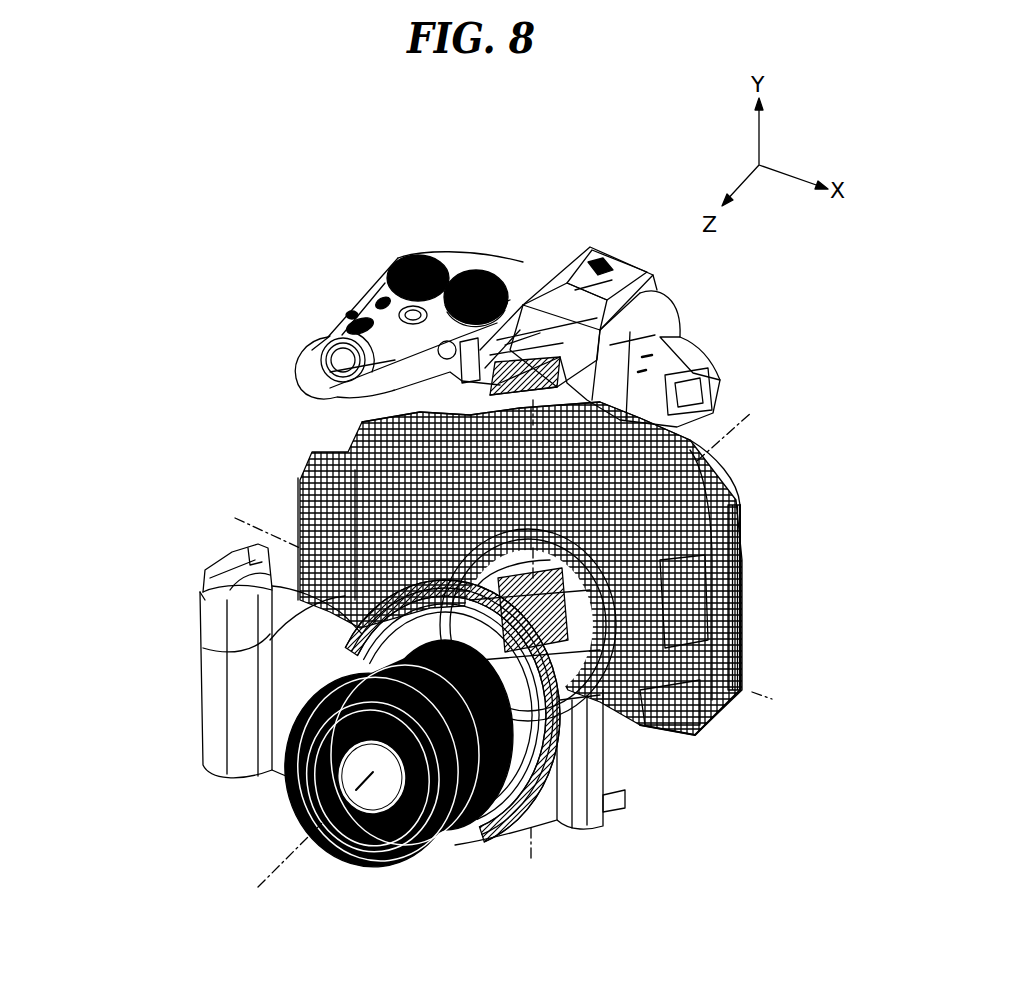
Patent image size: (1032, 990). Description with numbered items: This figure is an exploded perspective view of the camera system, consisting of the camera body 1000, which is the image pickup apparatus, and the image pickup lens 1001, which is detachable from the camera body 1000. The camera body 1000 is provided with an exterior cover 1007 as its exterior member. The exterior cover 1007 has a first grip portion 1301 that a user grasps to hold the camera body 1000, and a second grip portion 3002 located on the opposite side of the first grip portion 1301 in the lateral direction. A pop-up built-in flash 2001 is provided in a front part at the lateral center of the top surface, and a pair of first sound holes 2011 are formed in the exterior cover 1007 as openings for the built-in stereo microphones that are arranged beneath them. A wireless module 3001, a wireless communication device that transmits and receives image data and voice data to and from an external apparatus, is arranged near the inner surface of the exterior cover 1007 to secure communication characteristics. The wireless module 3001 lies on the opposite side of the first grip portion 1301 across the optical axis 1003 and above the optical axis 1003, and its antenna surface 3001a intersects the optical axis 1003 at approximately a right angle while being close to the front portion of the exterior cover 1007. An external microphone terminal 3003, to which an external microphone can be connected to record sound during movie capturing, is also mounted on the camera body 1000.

The camera body 1000 is at (742, 356).
The image pickup lens 1001 is at (293, 753).
The optical axis 1003 is at (290, 860).
The exterior cover 1007 is at (317, 343).
The first grip portion 1301 is at (215, 680).
The built-in flash 2001 is at (563, 355).
The first sound holes 2011 is at (586, 322).
The wireless module 3001 is at (715, 578).
The antenna surface 3001a is at (715, 614).
The second grip portion 3002 is at (577, 803).
The external microphone terminal 3003 is at (718, 715).